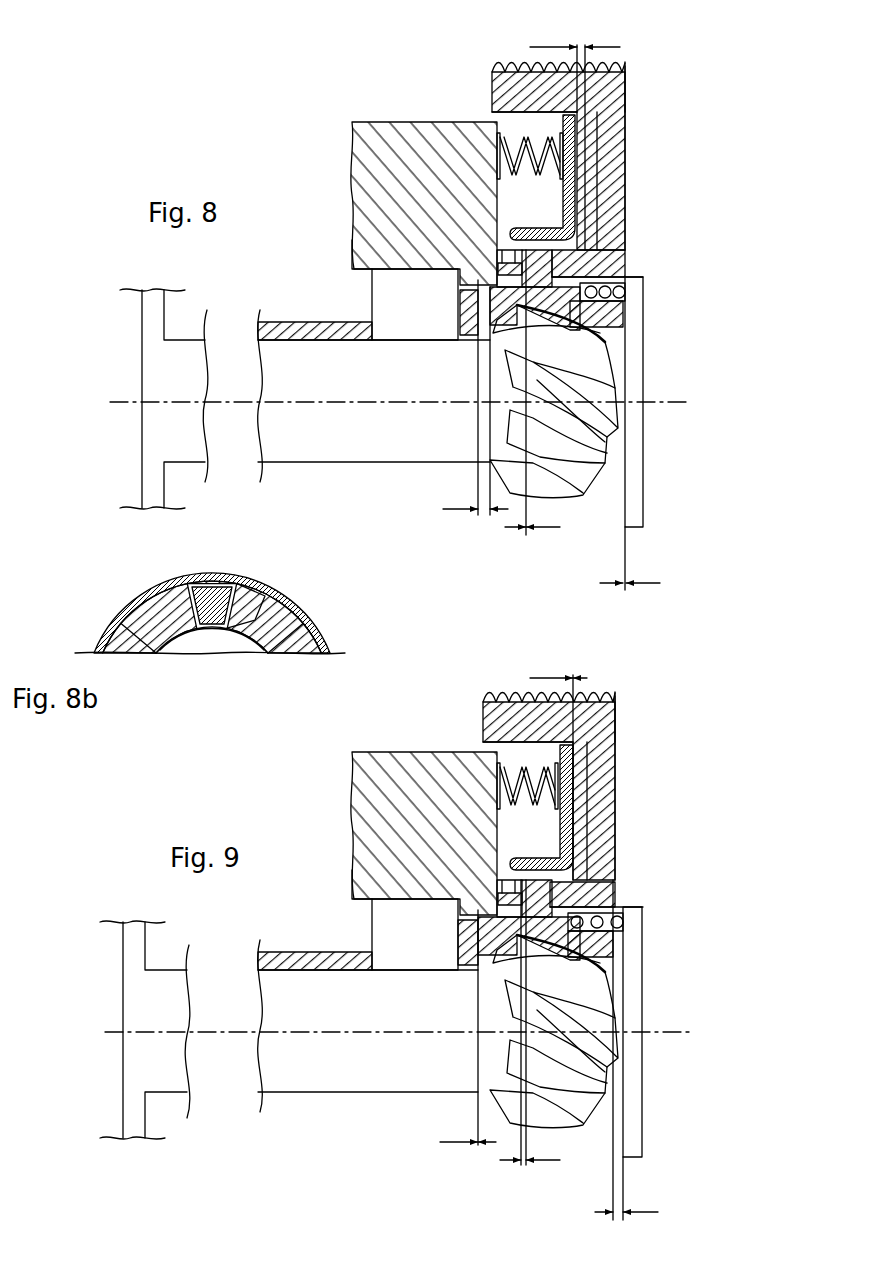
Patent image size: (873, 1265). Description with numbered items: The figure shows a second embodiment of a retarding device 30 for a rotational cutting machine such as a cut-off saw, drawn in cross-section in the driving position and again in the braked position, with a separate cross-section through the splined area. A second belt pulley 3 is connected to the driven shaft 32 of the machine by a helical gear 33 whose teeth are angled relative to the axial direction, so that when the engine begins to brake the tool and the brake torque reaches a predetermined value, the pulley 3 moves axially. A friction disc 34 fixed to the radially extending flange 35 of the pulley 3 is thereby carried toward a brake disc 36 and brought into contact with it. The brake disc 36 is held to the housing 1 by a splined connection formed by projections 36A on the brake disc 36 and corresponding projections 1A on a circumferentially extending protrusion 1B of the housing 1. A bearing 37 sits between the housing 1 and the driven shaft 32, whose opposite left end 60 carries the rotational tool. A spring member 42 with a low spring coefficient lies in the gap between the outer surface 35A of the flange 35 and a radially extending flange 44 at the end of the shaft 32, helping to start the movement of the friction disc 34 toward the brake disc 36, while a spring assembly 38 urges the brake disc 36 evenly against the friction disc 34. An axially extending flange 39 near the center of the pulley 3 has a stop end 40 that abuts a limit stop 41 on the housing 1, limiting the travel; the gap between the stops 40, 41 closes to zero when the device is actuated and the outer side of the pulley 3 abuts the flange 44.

In FIG. 8, the housing 1 is at (412, 137).
In FIG. 9, the housing 1 is at (424, 806).
In FIG. 8, the projections 1A is at (500, 253).
In FIG. 8b, the projections 1A is at (255, 603).
In FIG. 9, the projections 1A is at (432, 984).
In FIG. 8, the circumferentially extending protrusion 1B is at (590, 262).
In FIG. 8b, the circumferentially extending protrusion 1B is at (212, 640).
In FIG. 9, the circumferentially extending protrusion 1B is at (608, 873).
In FIG. 8, the second belt pulley 3 is at (607, 62).
In FIG. 9, the second belt pulley 3 is at (587, 754).
In FIG. 8, the retarding device 30 is at (735, 122).
In FIG. 9, the retarding device 30 is at (766, 716).
In FIG. 8, the driven shaft 32 is at (300, 352).
In FIG. 8b, the driven shaft 32 is at (240, 655).
In FIG. 9, the driven shaft 32 is at (332, 1007).
In FIG. 8, the helical gear 33 is at (590, 530).
In FIG. 9, the helical gear 33 is at (522, 1072).
In FIG. 8, the friction disc 34 is at (598, 165).
In FIG. 9, the friction disc 34 is at (589, 807).
In FIG. 8, the radially extending flange 35 is at (605, 128).
In FIG. 9, the radially extending flange 35 is at (667, 786).
In FIG. 8, the outer surface 35A is at (627, 110).
In FIG. 9, the outer surface 35A is at (652, 717).
In FIG. 8, the brake disc 36 is at (575, 110).
In FIG. 8b, the brake disc 36 is at (208, 582).
In FIG. 9, the brake disc 36 is at (525, 777).
In FIG. 8, the projections 36A is at (497, 212).
In FIG. 8b, the projections 36A is at (152, 608).
In FIG. 9, the projections 36A is at (435, 790).
In FIG. 8, the bearing 37 is at (417, 270).
In FIG. 9, the bearing 37 is at (340, 877).
In FIG. 8, the spring assembly 38 is at (500, 152).
In FIG. 9, the spring assembly 38 is at (486, 763).
In FIG. 8, the axially extending flange 39 is at (628, 277).
In FIG. 9, the axially extending flange 39 is at (631, 892).
In FIG. 8, the stop end 40 is at (470, 345).
In FIG. 9, the stop end 40 is at (406, 1027).
In FIG. 8, the limit stop 41 is at (458, 292).
In FIG. 9, the limit stop 41 is at (415, 1007).
In FIG. 8, the spring member 42 is at (605, 300).
In FIG. 9, the spring member 42 is at (639, 963).
In FIG. 8, the radially extending flange 44 is at (636, 487).
In FIG. 9, the radially extending flange 44 is at (653, 1050).
In FIG. 8, the left end 60 is at (162, 377).
In FIG. 9, the left end 60 is at (118, 1030).